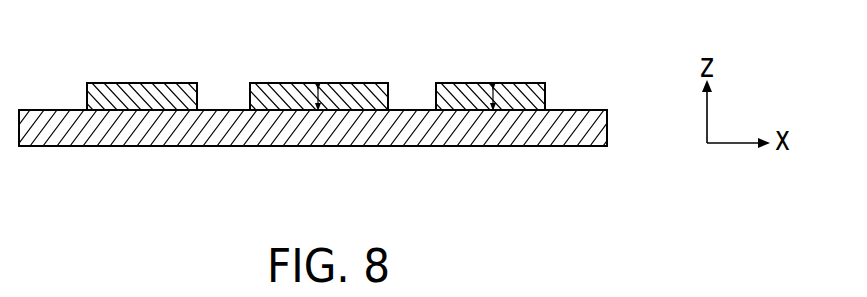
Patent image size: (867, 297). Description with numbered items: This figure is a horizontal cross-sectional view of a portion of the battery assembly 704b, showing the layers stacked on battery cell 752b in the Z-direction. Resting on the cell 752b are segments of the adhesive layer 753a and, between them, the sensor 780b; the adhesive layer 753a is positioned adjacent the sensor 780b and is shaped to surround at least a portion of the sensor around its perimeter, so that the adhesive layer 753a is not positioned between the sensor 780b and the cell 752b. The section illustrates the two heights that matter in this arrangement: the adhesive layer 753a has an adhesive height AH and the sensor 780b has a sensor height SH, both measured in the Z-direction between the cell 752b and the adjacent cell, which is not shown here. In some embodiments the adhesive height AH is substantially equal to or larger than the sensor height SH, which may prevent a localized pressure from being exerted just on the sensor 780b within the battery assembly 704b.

The battery cell 752b is at (630, 101).
The adhesive layer 753a is at (87, 97).
The sensor 780b is at (362, 83).
The sensor height SH is at (314, 95).
The adhesive height AH is at (490, 97).
The battery assembly 704b is at (353, 194).